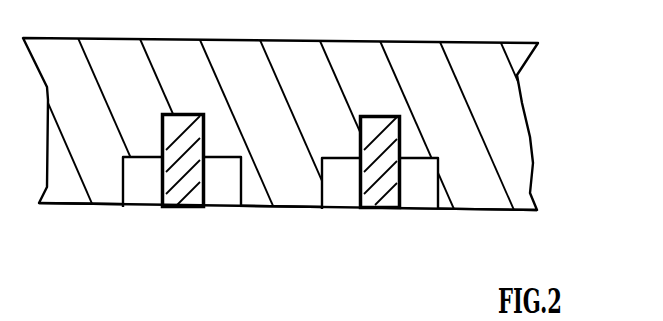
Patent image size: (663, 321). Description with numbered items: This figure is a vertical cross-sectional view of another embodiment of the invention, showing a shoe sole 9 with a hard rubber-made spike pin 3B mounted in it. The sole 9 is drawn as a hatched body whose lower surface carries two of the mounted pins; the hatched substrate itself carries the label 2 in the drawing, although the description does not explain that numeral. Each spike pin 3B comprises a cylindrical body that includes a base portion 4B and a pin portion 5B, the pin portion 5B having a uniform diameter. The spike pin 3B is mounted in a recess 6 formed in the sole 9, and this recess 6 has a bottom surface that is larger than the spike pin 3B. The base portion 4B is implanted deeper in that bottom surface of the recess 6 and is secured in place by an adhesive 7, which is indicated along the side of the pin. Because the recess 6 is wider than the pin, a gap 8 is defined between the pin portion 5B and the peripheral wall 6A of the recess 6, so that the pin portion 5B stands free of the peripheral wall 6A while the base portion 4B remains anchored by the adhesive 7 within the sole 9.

The semiconductor substrate 2 is at (282, 198).
The spike pin 3B is at (194, 205).
The base portion 4B is at (393, 130).
The pin portion 5B is at (337, 197).
The recess 6 is at (255, 200).
The peripheral wall 6A is at (163, 212).
The adhesive 7 is at (474, 185).
The gap 8 is at (156, 196).
The shoe sole 9 is at (505, 113).